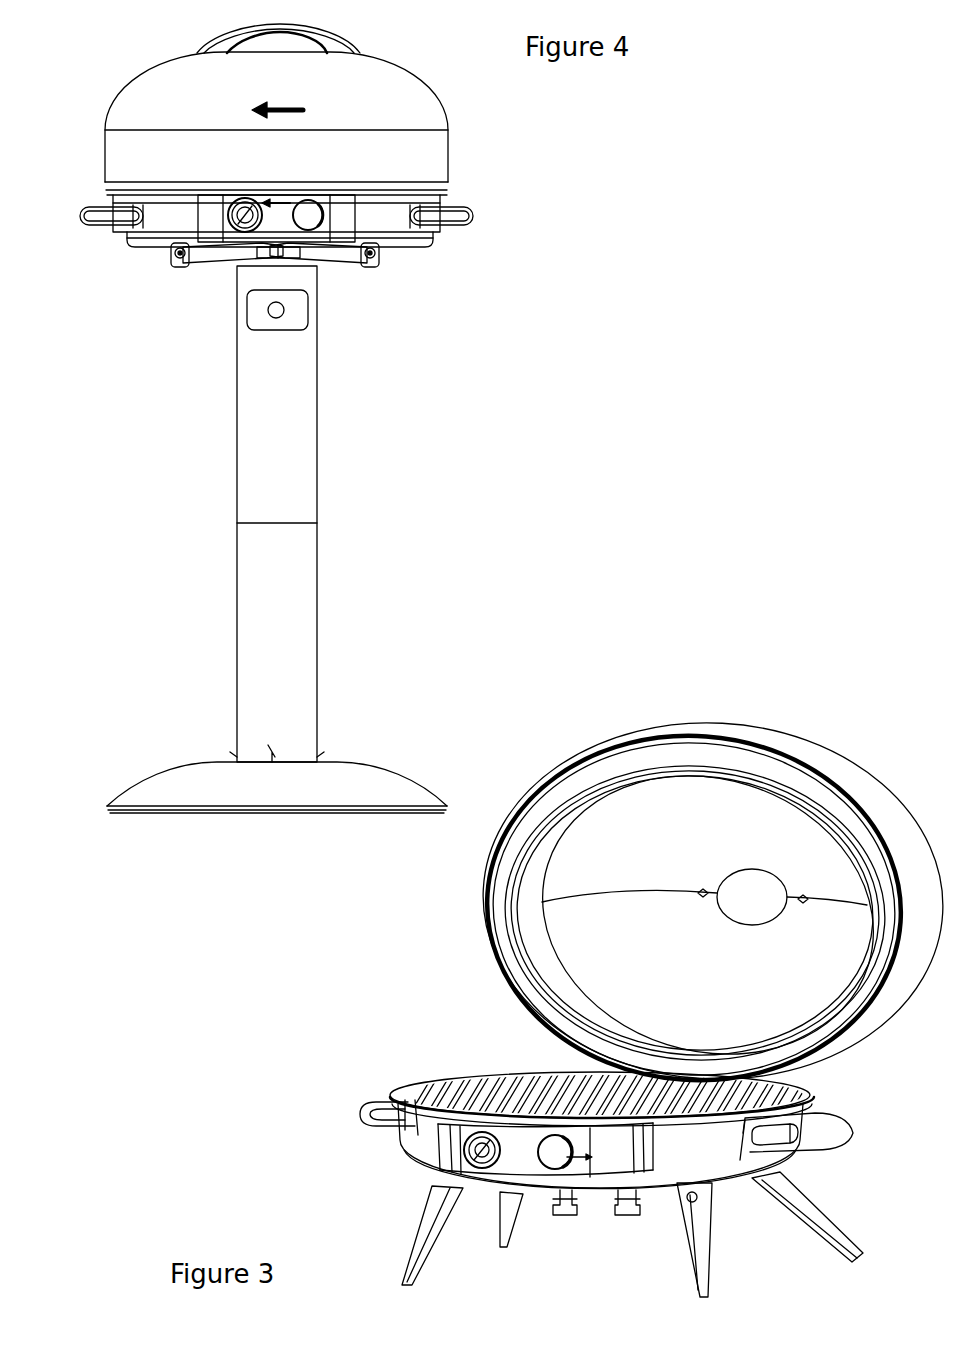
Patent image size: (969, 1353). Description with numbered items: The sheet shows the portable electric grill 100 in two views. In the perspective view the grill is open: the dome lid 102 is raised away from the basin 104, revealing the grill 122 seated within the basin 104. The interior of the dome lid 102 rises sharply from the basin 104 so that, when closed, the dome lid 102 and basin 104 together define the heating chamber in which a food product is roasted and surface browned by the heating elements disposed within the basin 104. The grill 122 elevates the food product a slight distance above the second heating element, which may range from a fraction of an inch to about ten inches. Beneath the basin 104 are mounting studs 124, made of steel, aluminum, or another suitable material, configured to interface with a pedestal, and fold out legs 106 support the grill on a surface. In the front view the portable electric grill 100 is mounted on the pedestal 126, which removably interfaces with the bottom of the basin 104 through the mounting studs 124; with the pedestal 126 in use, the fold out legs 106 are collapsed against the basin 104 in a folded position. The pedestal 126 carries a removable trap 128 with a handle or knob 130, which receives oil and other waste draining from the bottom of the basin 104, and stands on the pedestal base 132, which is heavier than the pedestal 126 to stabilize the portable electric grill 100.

In FIG. 4, the portable electric grill 100 is at (98, 76).
In FIG. 3, the portable electric grill 100 is at (738, 694).
In FIG. 3, the dome lid 102 is at (805, 752).
In FIG. 4, the basin 104 is at (420, 228).
In FIG. 3, the basin 104 is at (418, 1145).
In FIG. 4, the fold out legs 106 is at (182, 264).
In FIG. 3, the grill 122 is at (512, 1092).
In FIG. 3, the mounting studs 124 is at (632, 1215).
In FIG. 4, the pedestal 126 is at (314, 437).
In FIG. 4, the removable trap 128 is at (300, 312).
In FIG. 4, the handle or knob 130 is at (268, 312).
In FIG. 4, the pedestal base 132 is at (395, 783).